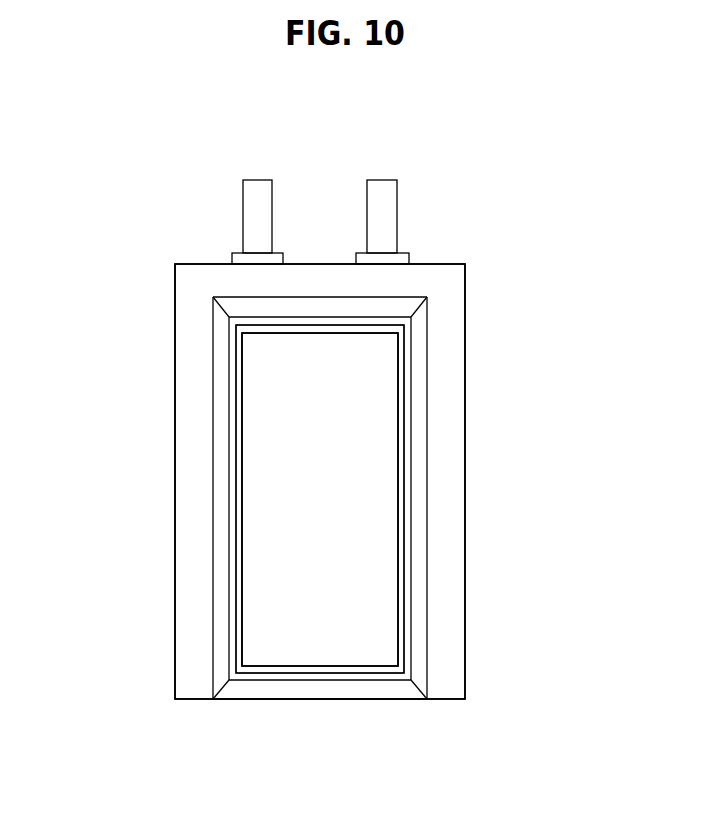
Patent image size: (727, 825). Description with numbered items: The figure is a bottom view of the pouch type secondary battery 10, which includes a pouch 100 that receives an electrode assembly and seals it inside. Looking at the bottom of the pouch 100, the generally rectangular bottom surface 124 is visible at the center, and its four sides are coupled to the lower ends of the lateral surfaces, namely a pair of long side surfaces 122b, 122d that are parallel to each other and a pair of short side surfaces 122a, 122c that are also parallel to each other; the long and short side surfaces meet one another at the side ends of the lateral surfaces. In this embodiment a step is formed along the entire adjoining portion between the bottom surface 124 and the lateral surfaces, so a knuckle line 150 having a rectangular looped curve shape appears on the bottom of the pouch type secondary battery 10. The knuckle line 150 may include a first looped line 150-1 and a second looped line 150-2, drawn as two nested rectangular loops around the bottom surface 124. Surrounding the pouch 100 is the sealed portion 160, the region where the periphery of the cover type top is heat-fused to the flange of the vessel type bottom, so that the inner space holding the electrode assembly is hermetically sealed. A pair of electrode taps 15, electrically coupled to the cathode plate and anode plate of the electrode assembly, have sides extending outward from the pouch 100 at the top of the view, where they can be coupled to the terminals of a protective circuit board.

The pouch type secondary battery 10 is at (502, 137).
The electrode tap 15 is at (255, 187).
The pouch 100 is at (472, 371).
The short side surface 122a is at (315, 310).
The long side surface 122b is at (222, 431).
The short side surface 122c is at (340, 693).
The long side surface 122d is at (420, 491).
The bottom surface 124 is at (342, 548).
The knuckle line 150 is at (585, 413).
The first looped line 150-1 is at (404, 402).
The second looped line 150-2 is at (399, 452).
The sealed portion 160 is at (451, 557).